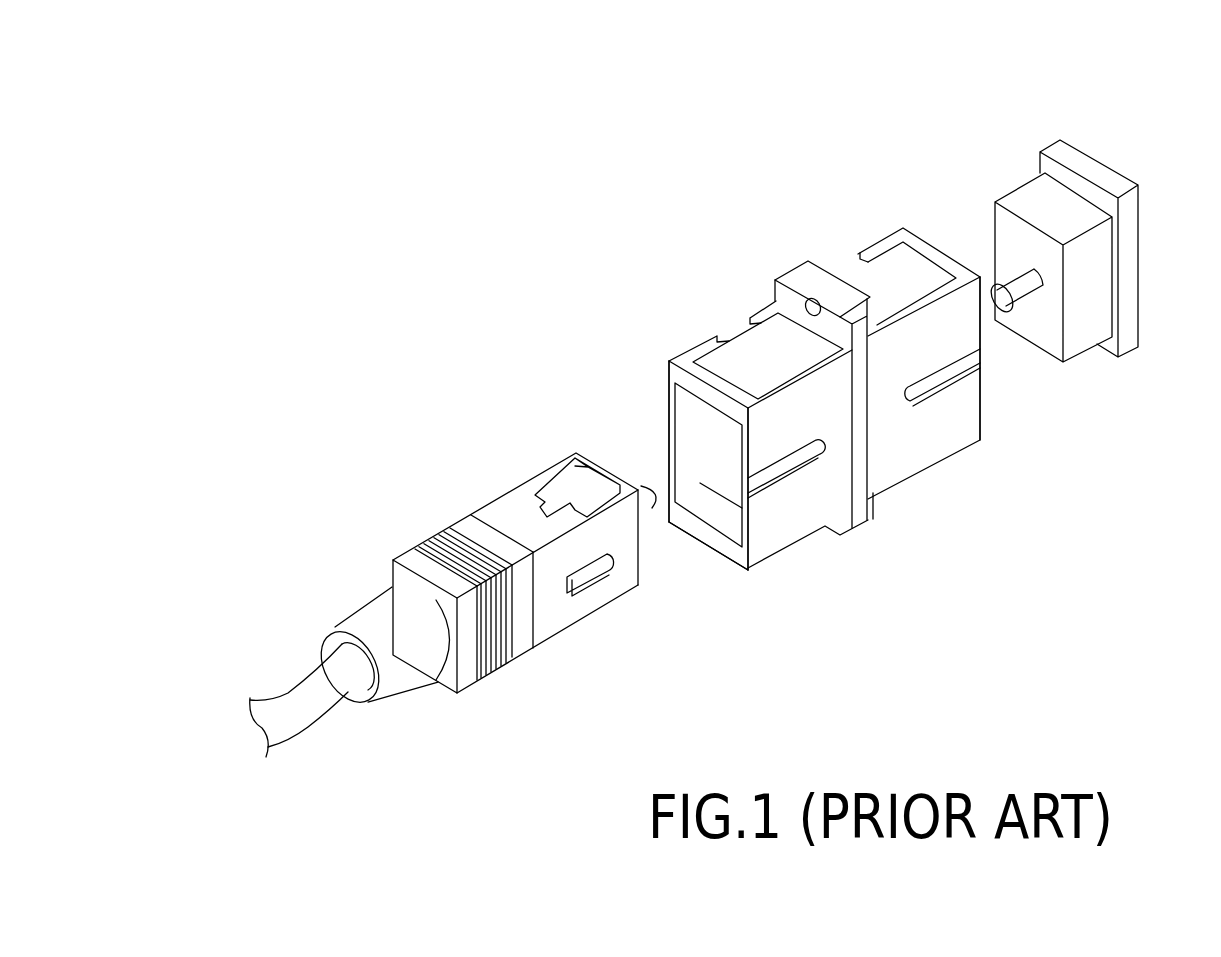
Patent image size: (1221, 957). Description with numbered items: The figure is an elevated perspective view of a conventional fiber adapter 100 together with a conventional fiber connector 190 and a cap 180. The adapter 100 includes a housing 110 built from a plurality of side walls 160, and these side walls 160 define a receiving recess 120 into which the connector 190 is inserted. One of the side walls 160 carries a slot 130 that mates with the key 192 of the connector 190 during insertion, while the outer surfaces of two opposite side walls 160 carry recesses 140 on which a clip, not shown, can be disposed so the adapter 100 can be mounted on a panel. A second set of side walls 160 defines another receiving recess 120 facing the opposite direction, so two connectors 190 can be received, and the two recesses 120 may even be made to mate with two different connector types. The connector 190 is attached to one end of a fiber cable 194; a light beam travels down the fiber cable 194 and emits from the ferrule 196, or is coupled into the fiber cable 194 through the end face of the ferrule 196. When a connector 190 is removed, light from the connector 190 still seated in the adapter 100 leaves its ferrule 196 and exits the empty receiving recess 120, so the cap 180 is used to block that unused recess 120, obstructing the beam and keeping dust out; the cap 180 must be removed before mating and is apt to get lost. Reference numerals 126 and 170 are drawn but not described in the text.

The fiber adapter 100 is at (735, 181).
The housing 110 is at (665, 330).
The receiving recess 120 is at (708, 533).
The connector receiving opening 126 is at (674, 377).
The slot 130 is at (795, 462).
The recess 140 is at (770, 335).
The side wall 160 is at (667, 448).
The mounting flange 170 is at (726, 318).
The cap 180 is at (1124, 159).
The connector 190 is at (428, 492).
The key 192 is at (590, 582).
The fiber cable 194 is at (310, 685).
The ferrule 196 is at (645, 488).